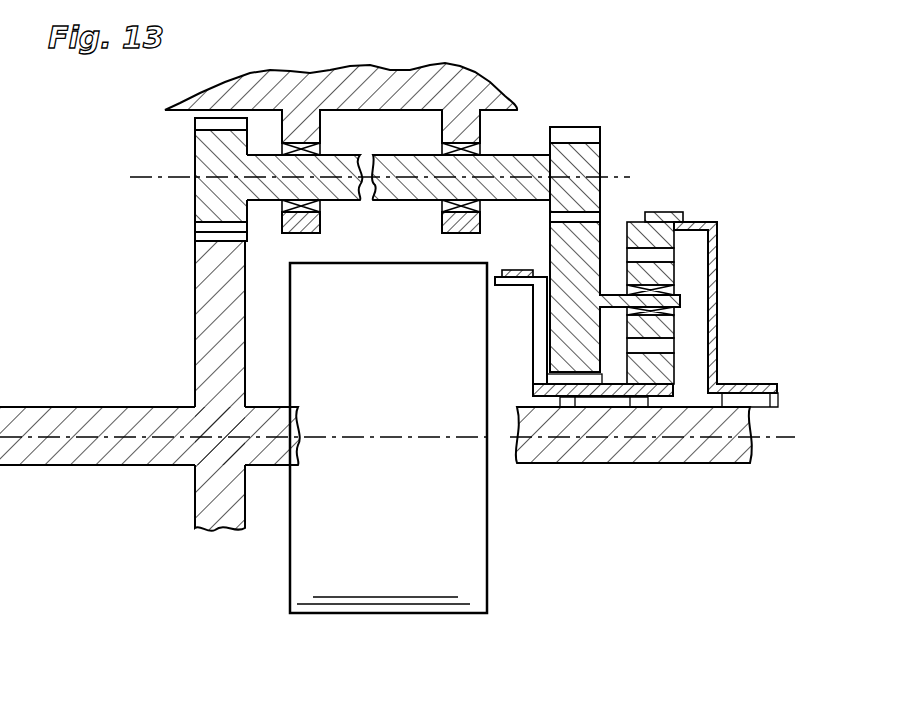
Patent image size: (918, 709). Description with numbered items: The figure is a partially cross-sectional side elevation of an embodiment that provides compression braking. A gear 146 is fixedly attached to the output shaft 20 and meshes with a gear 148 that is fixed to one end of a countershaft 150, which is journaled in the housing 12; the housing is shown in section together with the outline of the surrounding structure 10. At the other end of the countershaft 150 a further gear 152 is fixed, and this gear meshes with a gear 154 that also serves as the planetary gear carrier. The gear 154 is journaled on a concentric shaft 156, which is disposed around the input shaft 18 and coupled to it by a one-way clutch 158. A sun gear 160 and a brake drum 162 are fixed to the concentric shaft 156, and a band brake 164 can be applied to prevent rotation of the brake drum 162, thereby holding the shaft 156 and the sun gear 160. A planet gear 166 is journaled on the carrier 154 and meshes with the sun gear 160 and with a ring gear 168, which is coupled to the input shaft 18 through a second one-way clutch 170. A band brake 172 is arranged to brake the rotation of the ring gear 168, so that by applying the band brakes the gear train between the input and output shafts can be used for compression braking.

The housing 10 is at (398, 580).
The housing 12 is at (467, 82).
The input shaft 18 is at (695, 458).
The output shaft 20 is at (98, 408).
The gear 146 is at (213, 320).
The gear 148 is at (215, 195).
The countershaft 150 is at (522, 158).
The gear 152 is at (598, 165).
The gear 154 is at (580, 328).
The concentric shaft 156 is at (570, 397).
The one-way clutch 158 is at (627, 398).
The sun gear 160 is at (677, 378).
The brake drum 162 is at (507, 284).
The band brake 164 is at (513, 270).
The planet gear 166 is at (655, 272).
The ring gear 168 is at (668, 232).
The one-way clutch 170 is at (770, 405).
The band brake 172 is at (660, 225).